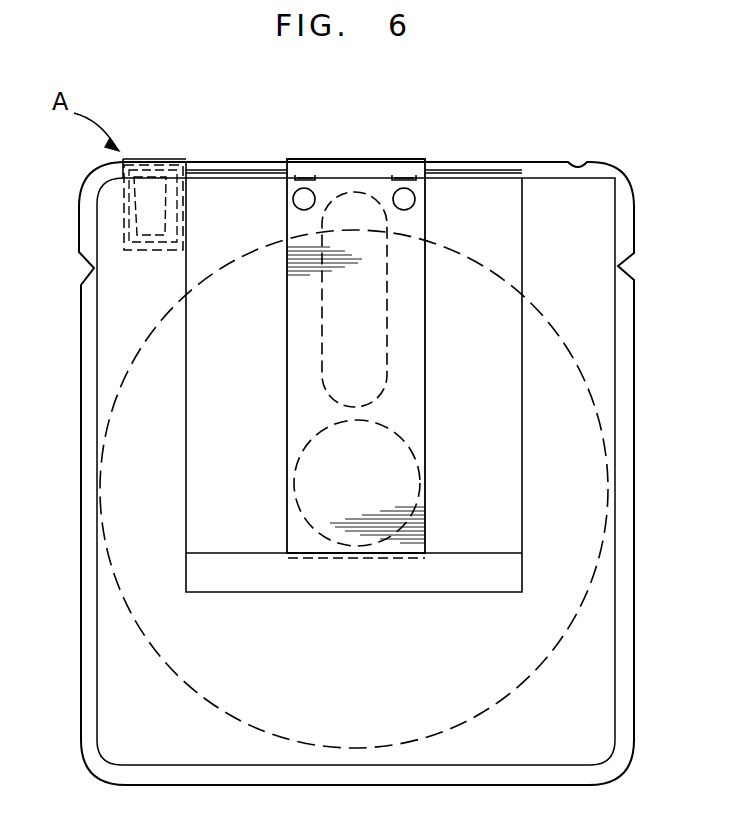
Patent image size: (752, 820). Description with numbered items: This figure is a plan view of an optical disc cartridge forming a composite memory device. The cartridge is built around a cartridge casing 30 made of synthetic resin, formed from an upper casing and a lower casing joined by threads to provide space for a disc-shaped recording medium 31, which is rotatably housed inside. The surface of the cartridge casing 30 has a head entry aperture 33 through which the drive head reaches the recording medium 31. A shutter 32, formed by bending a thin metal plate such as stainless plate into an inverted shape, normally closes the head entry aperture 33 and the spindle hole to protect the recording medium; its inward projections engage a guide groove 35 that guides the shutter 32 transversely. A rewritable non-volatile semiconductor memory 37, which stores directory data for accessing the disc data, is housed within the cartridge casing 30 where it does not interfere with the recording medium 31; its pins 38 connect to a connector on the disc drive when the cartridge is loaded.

The cartridge casing 30 is at (634, 196).
The disc-shaped recording medium 31 is at (600, 392).
The shutter 32 is at (419, 369).
The head entry aperture 33 is at (386, 292).
The guide groove 35 is at (466, 181).
The semiconductor memory 37 is at (125, 216).
The pins 38 is at (163, 160).